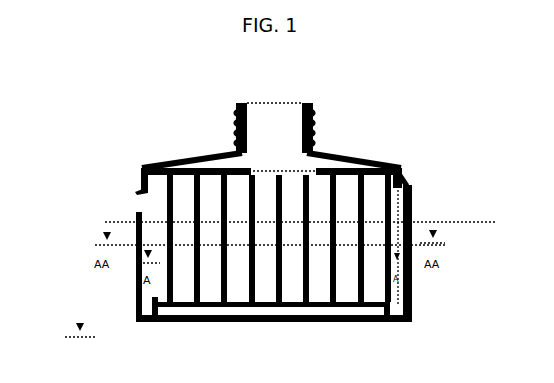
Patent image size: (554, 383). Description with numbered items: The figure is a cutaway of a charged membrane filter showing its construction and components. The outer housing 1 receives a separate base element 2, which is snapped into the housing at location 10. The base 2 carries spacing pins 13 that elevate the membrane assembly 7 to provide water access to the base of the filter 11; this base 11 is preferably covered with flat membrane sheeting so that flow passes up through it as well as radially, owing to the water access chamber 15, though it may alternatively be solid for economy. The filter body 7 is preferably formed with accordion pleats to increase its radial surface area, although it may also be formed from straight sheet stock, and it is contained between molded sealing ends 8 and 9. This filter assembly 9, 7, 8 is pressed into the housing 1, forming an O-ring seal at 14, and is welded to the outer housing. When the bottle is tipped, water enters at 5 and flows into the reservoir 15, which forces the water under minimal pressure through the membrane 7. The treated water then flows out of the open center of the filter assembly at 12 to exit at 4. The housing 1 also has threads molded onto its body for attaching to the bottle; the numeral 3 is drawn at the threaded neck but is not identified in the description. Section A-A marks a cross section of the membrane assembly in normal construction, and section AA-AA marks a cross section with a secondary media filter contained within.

The outer housing 1 is at (136, 297).
The base element 2 is at (193, 322).
The threaded neck 3 is at (236, 130).
The exit 4 is at (278, 103).
The water entry 5 is at (135, 201).
The filter body 7 is at (410, 200).
The molded sealing end 8 is at (141, 166).
The molded sealing end 9 is at (410, 295).
The snap location 10 is at (410, 311).
The base of the filter 11 is at (268, 311).
The open center / threads 12 is at (283, 170).
The spacing pins 13 is at (390, 320).
The O-ring seal 14 is at (403, 178).
The water access chamber 15 is at (304, 228).